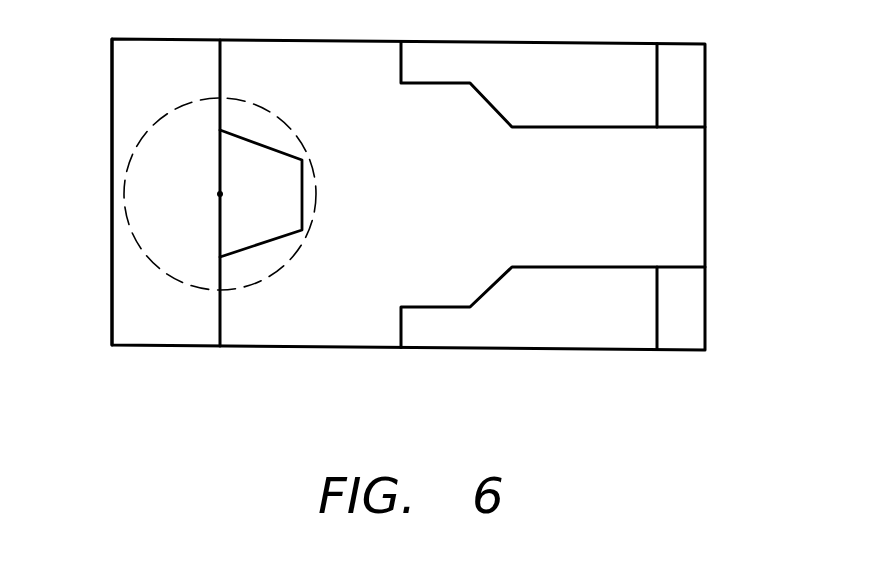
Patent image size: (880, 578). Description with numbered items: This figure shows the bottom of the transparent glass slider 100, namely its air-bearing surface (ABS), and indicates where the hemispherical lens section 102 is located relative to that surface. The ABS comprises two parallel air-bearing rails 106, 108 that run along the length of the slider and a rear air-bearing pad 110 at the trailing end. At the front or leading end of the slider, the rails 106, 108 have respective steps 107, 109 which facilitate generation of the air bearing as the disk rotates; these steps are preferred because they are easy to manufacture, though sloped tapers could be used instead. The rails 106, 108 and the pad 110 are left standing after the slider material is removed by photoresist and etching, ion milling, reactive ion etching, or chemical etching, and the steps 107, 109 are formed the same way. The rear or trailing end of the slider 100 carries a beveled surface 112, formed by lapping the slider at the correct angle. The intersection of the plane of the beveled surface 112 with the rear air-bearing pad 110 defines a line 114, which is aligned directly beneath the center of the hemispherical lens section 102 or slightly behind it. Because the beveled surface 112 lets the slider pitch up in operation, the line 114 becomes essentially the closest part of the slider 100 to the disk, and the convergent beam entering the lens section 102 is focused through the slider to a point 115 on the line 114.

The slider 100 is at (705, 195).
The hemispherical lens section 102 is at (143, 128).
The air-bearing rail 106 is at (548, 62).
The step 107 is at (692, 70).
The air-bearing rail 108 is at (600, 335).
The step 109 is at (693, 320).
The rear air-bearing pad 110 is at (268, 228).
The beveled surface 112 is at (140, 71).
The line 114 is at (220, 332).
The point 115 is at (220, 194).